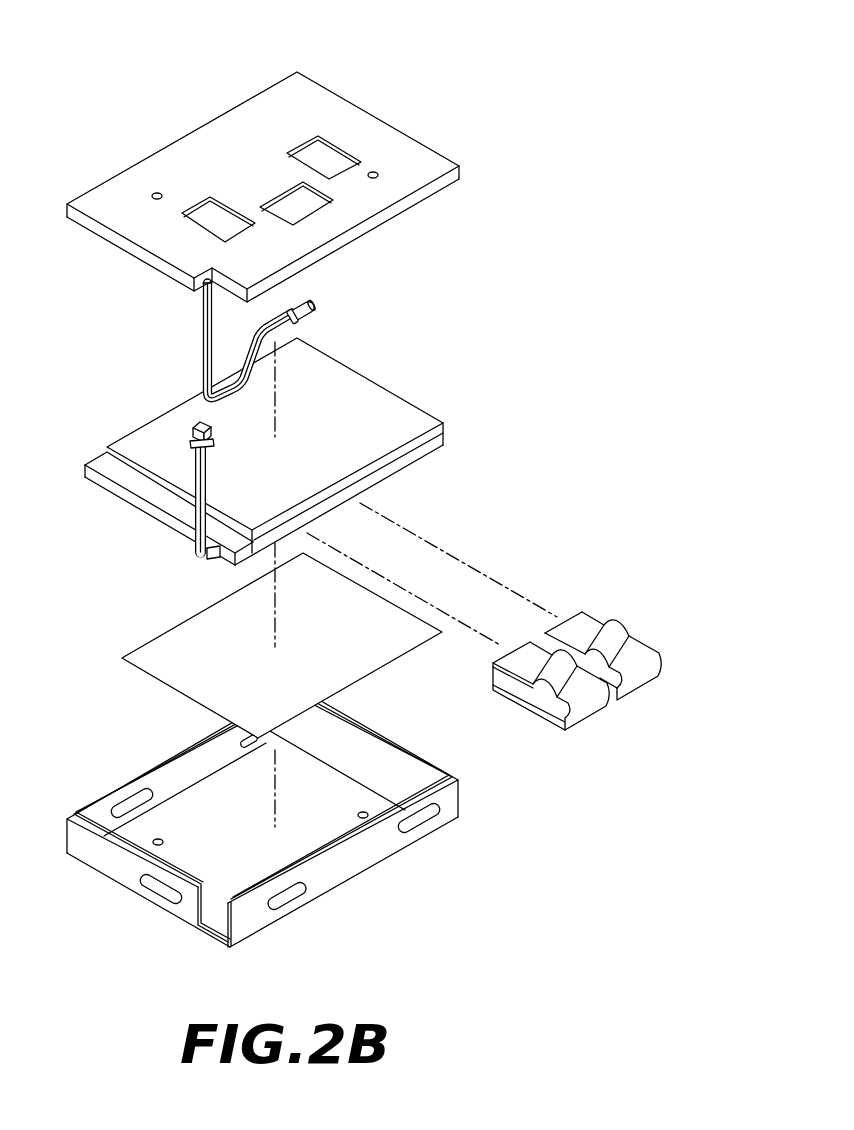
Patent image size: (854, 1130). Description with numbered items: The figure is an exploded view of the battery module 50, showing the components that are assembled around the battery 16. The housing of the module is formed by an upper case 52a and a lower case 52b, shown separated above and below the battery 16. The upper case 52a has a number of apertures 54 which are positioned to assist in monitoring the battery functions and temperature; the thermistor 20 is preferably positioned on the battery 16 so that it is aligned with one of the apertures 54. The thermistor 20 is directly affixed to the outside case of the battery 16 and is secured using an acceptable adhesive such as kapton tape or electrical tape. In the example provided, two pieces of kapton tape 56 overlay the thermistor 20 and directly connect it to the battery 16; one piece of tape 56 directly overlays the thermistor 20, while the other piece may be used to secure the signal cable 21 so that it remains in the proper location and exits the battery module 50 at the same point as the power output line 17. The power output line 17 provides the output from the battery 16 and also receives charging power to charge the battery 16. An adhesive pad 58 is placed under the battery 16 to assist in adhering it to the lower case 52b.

The battery module 50 is at (95, 57).
The upper case 52a is at (263, 174).
The apertures 54 is at (337, 158).
The thermistor 20 is at (313, 307).
The signal cable 21 is at (203, 333).
The battery 16 is at (398, 422).
The power output line 17 is at (198, 462).
The kapton tape 56 is at (633, 648).
The adhesive pad 58 is at (178, 675).
The lower case 52b is at (357, 860).